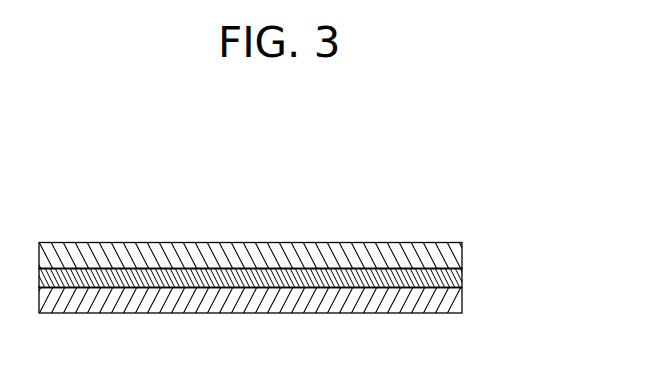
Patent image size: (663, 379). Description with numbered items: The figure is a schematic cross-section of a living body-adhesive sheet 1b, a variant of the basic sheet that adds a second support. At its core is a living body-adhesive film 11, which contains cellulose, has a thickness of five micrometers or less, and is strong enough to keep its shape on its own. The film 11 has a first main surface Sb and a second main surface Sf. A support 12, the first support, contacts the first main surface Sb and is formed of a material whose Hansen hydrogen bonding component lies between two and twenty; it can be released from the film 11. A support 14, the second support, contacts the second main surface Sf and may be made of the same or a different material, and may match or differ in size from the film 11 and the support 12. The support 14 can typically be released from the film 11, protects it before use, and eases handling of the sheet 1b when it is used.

The living body-adhesive sheet 1b is at (414, 216).
The support (second support) 14 is at (462, 252).
The living body-adhesive film 11 is at (462, 275).
The support (first support) 12 is at (462, 297).
The first main surface Sb is at (161, 290).
The second main surface Sf is at (204, 266).